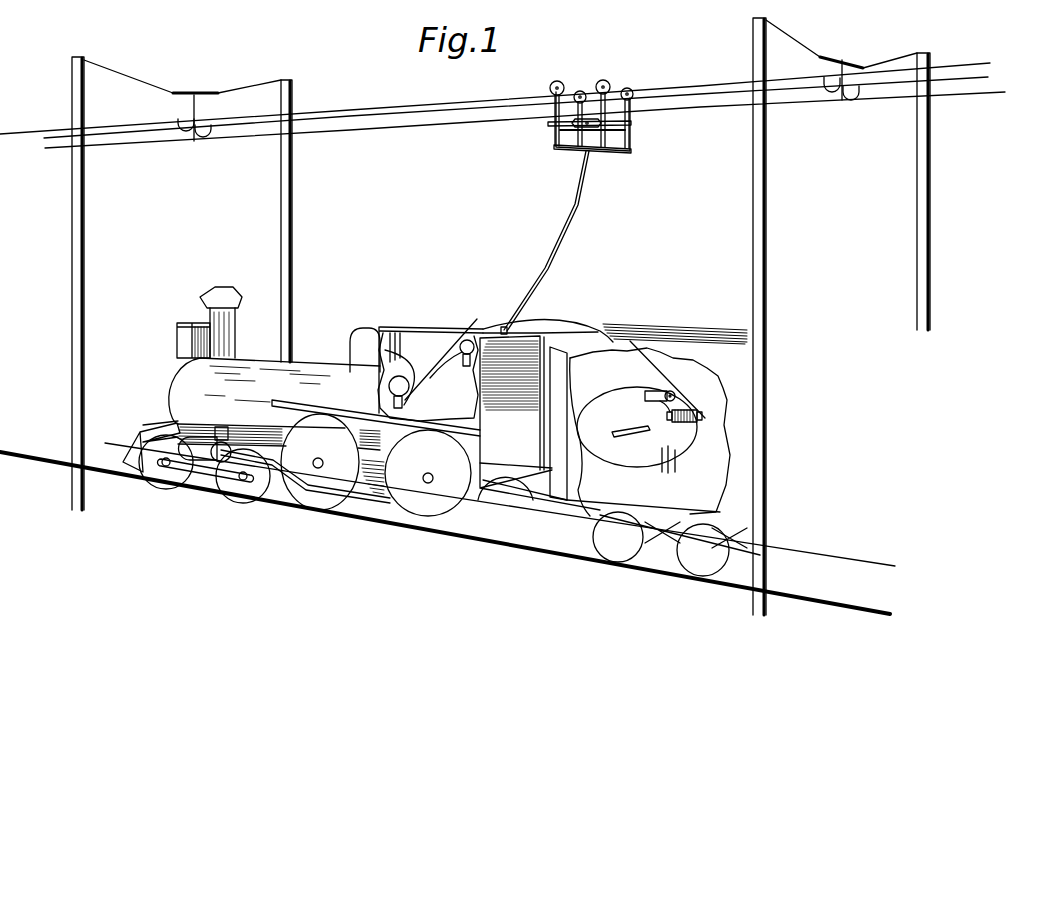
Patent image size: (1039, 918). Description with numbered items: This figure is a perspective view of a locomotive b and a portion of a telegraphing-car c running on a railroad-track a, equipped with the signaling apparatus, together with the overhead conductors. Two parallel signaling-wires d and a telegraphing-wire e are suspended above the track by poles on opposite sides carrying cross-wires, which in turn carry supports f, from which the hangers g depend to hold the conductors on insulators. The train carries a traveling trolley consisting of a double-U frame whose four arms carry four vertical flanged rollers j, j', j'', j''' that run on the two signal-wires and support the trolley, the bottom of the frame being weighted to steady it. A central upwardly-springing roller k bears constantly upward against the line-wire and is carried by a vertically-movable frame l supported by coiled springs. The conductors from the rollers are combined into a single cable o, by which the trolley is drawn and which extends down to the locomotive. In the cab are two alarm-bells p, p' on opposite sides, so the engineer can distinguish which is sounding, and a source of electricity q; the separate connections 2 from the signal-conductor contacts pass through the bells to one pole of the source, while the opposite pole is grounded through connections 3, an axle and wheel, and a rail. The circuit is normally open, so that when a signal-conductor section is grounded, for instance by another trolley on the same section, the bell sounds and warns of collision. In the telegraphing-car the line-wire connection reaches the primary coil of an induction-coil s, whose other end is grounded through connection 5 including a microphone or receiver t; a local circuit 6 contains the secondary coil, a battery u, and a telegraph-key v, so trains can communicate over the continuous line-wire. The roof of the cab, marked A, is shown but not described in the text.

The railroad-track a is at (833, 604).
The locomotive b is at (263, 390).
The telegraphing-car c is at (657, 420).
The signaling-wires d is at (990, 63).
The telegraphing-wire e is at (533, 116).
The supports f is at (193, 92).
The hangers g is at (200, 107).
The flanged or deeply-grooved roller j is at (556, 103).
The flanged or deeply-grooved roller j' is at (580, 104).
The flanged or deeply-grooved roller j'' is at (606, 103).
The flanged or deeply-grooved roller j''' is at (633, 104).
The central upwardly-springing roller k is at (631, 132).
The vertically-movable frame l is at (573, 130).
The cable o is at (569, 212).
The connections 2 is at (463, 349).
The connections 3 is at (385, 400).
The connection 5 is at (667, 405).
The local circuit 6 is at (653, 453).
The alarm-bell p is at (385, 379).
The alarm-bell p' is at (450, 351).
The source of electricity q is at (400, 334).
The induction-coil s is at (696, 432).
The microphone or other receiver t is at (662, 390).
The battery or source u is at (677, 465).
The telegraph-key or other circuit closer and breaker v is at (613, 433).
The cab roof A is at (562, 322).